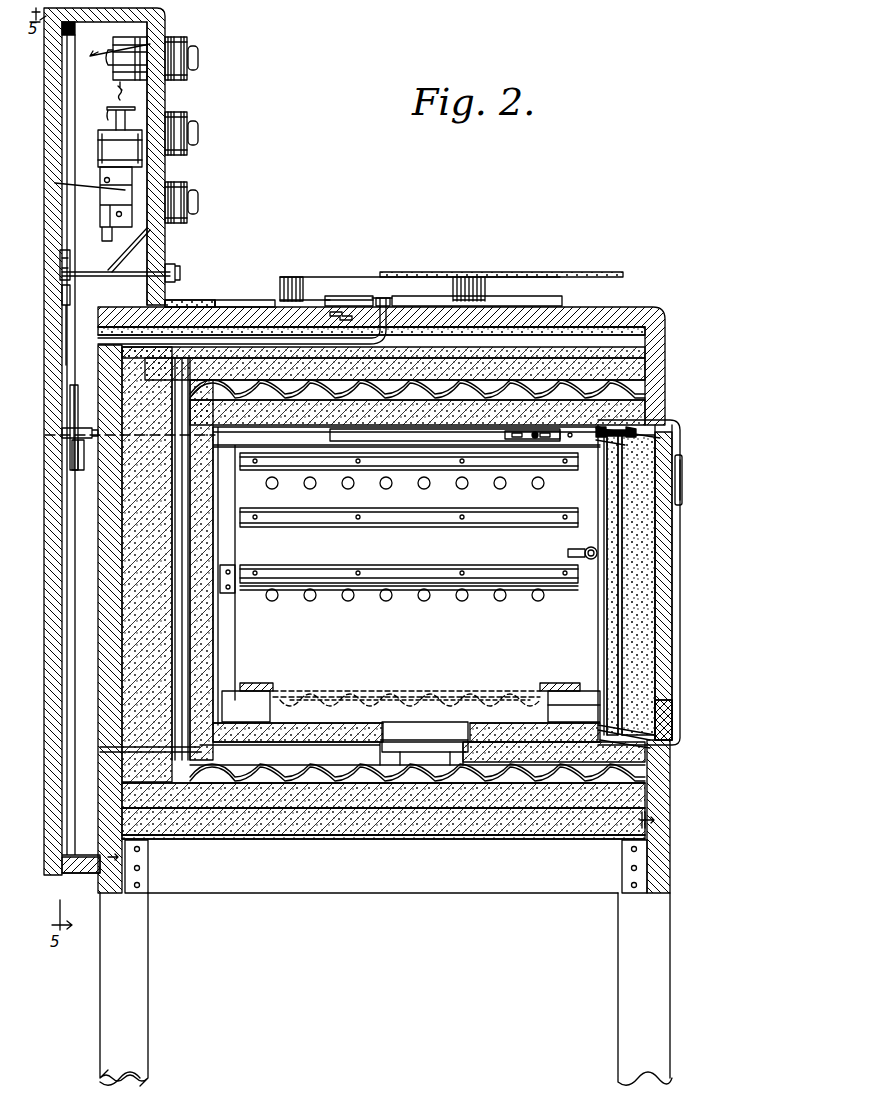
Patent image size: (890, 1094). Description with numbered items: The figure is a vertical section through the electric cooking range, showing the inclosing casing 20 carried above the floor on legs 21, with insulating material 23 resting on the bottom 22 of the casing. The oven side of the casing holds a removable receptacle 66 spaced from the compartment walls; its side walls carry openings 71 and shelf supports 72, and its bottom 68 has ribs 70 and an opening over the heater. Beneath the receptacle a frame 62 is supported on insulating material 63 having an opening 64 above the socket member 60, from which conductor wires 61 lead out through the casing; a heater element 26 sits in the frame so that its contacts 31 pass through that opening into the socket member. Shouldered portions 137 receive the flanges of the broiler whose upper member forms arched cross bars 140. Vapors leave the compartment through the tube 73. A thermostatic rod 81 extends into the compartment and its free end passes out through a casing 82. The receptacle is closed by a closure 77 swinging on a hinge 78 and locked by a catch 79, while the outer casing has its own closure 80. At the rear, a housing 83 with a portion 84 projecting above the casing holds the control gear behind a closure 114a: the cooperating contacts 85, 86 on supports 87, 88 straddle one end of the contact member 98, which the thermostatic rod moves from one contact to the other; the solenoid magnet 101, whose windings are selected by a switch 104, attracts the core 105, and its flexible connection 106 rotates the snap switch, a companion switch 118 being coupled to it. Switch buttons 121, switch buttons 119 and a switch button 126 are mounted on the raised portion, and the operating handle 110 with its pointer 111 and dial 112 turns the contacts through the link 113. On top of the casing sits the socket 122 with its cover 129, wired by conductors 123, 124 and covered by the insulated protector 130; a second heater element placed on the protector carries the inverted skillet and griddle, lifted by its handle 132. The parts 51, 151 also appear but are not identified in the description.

The housing 83 is at (165, 27).
The contact member 98 is at (198, 55).
The switch 118 is at (128, 52).
The switch buttons 121 is at (188, 60).
The portion of housing 84 is at (165, 107).
The switch button 126 is at (190, 130).
The closure 114a is at (147, 172).
The switch 104 is at (115, 198).
The switch buttons 119 is at (196, 195).
The flexible connection 106 is at (117, 90).
The core 105 is at (114, 120).
The solenoid magnet 101 is at (120, 148).
The dial 112 is at (165, 258).
The pointer 111 is at (148, 252).
The operating handle 110 is at (180, 270).
The link 113 is at (78, 290).
The contact 85 is at (78, 420).
The support 87 is at (59, 446).
The contact 86 is at (117, 461).
The support 88 is at (84, 468).
The conductor 124 is at (250, 300).
The conductor 123 is at (210, 300).
The grooved roller 151 is at (308, 276).
The contacts 31 is at (385, 298).
The electric heater element 26 is at (380, 300).
The cover 129 is at (350, 297).
The socket 122 is at (430, 300).
The handle 132 is at (573, 273).
The insulated protector 130 is at (560, 262).
The inclosing casing 20 is at (670, 797).
The legs 21 is at (150, 1000).
The conductor wires 61 is at (95, 760).
The socket member 60 is at (360, 825).
The bottom sheet 51 is at (388, 838).
The insulating material 23 is at (542, 828).
The bottom of casing 22 is at (430, 840).
The tube 73 is at (370, 440).
The thermostatic rod 81 is at (298, 444).
The casing 82 is at (226, 470).
The openings 71 is at (386, 490).
The shelf supports 72 is at (530, 575).
The removable receptacle 66 is at (240, 558).
The shouldered portions 137 is at (278, 670).
The bottom of receptacle 68 is at (255, 690).
The insulating material 63 is at (282, 700).
The ribs 70 is at (348, 690).
The cross bars 140 is at (398, 690).
The opening 64 is at (415, 735).
The frame 62 is at (565, 695).
The closure 77 is at (610, 600).
The catch 79 is at (660, 450).
The closure 80 is at (685, 492).
The hinge 78 is at (660, 728).